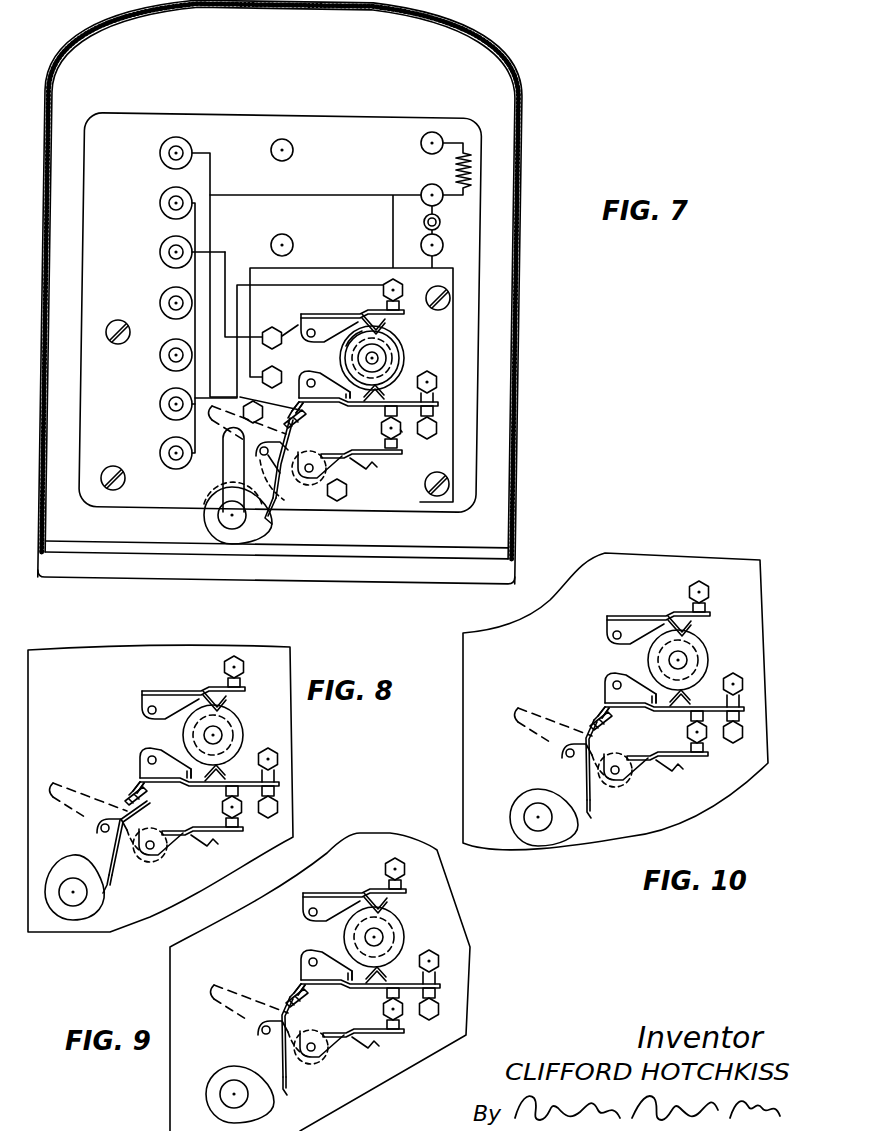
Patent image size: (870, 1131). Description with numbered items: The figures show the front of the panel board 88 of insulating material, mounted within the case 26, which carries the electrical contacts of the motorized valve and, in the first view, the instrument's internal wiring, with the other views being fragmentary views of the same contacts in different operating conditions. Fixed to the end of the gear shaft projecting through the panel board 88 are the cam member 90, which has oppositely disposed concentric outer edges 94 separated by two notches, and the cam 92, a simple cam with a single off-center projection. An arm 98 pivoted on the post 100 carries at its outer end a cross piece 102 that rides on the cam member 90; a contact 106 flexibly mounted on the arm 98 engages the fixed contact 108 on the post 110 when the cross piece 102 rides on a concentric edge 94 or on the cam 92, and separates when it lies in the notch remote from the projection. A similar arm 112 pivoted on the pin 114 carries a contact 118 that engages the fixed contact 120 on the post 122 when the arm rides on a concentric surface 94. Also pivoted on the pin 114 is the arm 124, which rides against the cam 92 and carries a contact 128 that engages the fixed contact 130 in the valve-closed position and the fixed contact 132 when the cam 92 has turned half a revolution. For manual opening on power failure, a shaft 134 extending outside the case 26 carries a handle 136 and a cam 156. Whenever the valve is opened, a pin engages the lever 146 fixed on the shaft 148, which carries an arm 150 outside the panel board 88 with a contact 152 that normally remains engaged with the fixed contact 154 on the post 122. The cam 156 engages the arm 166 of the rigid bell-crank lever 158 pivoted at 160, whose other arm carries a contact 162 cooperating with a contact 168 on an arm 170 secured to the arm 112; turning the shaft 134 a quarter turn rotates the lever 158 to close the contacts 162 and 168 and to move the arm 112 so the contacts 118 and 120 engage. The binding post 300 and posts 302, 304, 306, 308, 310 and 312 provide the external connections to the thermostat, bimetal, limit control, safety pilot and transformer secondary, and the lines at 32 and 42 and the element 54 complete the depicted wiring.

In FIG. 7, the case 26 is at (530, 119).
In FIG. 7, the base plate 32 is at (62, 582).
In FIG. 7, the lamp terminal 42 is at (441, 222).
In FIG. 7, the resistor 54 is at (476, 168).
In FIG. 7, the panel board 88 is at (477, 224).
In FIG. 8, the panel board 88 is at (77, 654).
In FIG. 9, the panel board 88 is at (190, 990).
In FIG. 10, the panel board 88 is at (762, 562).
In FIG. 7, the cam member 90 is at (402, 344).
In FIG. 8, the cam member 90 is at (269, 726).
In FIG. 10, the cam member 90 is at (700, 648).
In FIG. 7, the cam 92 is at (396, 358).
In FIG. 8, the cam 92 is at (232, 729).
In FIG. 9, the cam 92 is at (393, 933).
In FIG. 10, the cam 92 is at (697, 660).
In FIG. 7, the concentric outer edges 94 is at (375, 358).
In FIG. 8, the concentric outer edges 94 is at (218, 735).
In FIG. 9, the concentric outer edges 94 is at (383, 937).
In FIG. 10, the concentric outer edges 94 is at (683, 660).
In FIG. 7, the arm 98 is at (342, 340).
In FIG. 7, the post 100 is at (316, 321).
In FIG. 8, the post 100 is at (170, 691).
In FIG. 9, the post 100 is at (331, 893).
In FIG. 10, the post 100 is at (635, 614).
In FIG. 7, the cross piece 102 is at (391, 324).
In FIG. 8, the cross piece 102 is at (240, 697).
In FIG. 9, the cross piece 102 is at (400, 898).
In FIG. 10, the cross piece 102 is at (716, 623).
In FIG. 7, the contact 106 is at (366, 304).
In FIG. 8, the contact 106 is at (208, 677).
In FIG. 9, the contact 106 is at (389, 880).
In FIG. 10, the contact 106 is at (677, 598).
In FIG. 7, the fixed contact 108 is at (409, 295).
In FIG. 8, the fixed contact 108 is at (250, 667).
In FIG. 9, the fixed contact 108 is at (411, 856).
In FIG. 10, the fixed contact 108 is at (714, 585).
In FIG. 7, the post 110 is at (408, 285).
In FIG. 8, the post 110 is at (244, 648).
In FIG. 9, the post 110 is at (403, 847).
In FIG. 10, the post 110 is at (708, 568).
In FIG. 7, the arm 112 is at (331, 379).
In FIG. 8, the arm 112 is at (193, 784).
In FIG. 9, the arm 112 is at (339, 994).
In FIG. 10, the arm 112 is at (640, 684).
In FIG. 7, the pin 114 is at (312, 373).
In FIG. 8, the pin 114 is at (149, 760).
In FIG. 9, the pin 114 is at (312, 959).
In FIG. 10, the pin 114 is at (615, 682).
In FIG. 7, the contact 118 is at (370, 414).
In FIG. 8, the contact 118 is at (241, 777).
In FIG. 9, the contact 118 is at (374, 991).
In FIG. 10, the contact 118 is at (703, 704).
In FIG. 7, the fixed contact 120 is at (372, 428).
In FIG. 8, the fixed contact 120 is at (217, 805).
In FIG. 9, the fixed contact 120 is at (376, 1007).
In FIG. 10, the fixed contact 120 is at (683, 727).
In FIG. 7, the post 122 is at (421, 448).
In FIG. 7, the arm 124 is at (389, 393).
In FIG. 8, the arm 124 is at (189, 759).
In FIG. 9, the arm 124 is at (349, 959).
In FIG. 10, the arm 124 is at (662, 710).
In FIG. 7, the contact 128 is at (400, 393).
In FIG. 8, the contact 128 is at (241, 770).
In FIG. 9, the contact 128 is at (407, 976).
In FIG. 10, the contact 128 is at (709, 697).
In FIG. 7, the fixed contact 130 is at (430, 422).
In FIG. 8, the fixed contact 130 is at (301, 796).
In FIG. 9, the fixed contact 130 is at (470, 1000).
In FIG. 10, the fixed contact 130 is at (765, 726).
In FIG. 7, the fixed contact 132 is at (441, 381).
In FIG. 8, the fixed contact 132 is at (290, 758).
In FIG. 9, the fixed contact 132 is at (463, 964).
In FIG. 10, the fixed contact 132 is at (765, 689).
In FIG. 7, the shaft 134 is at (238, 537).
In FIG. 8, the shaft 134 is at (71, 914).
In FIG. 9, the shaft 134 is at (191, 1094).
In FIG. 10, the shaft 134 is at (506, 817).
In FIG. 7, the handle 136 is at (223, 465).
In FIG. 7, the lever 146 is at (216, 424).
In FIG. 8, the lever 146 is at (83, 783).
In FIG. 9, the lever 146 is at (234, 1012).
In FIG. 10, the lever 146 is at (538, 726).
In FIG. 7, the shaft 148 is at (317, 497).
In FIG. 8, the shaft 148 is at (158, 851).
In FIG. 9, the shaft 148 is at (333, 1051).
In FIG. 10, the shaft 148 is at (629, 780).
In FIG. 7, the arm 150 is at (367, 476).
In FIG. 8, the arm 150 is at (213, 851).
In FIG. 9, the arm 150 is at (381, 1048).
In FIG. 10, the arm 150 is at (681, 773).
In FIG. 7, the contact 152 is at (361, 462).
In FIG. 8, the contact 152 is at (214, 838).
In FIG. 9, the contact 152 is at (386, 1028).
In FIG. 10, the contact 152 is at (680, 762).
In FIG. 7, the fixed contact 154 is at (373, 439).
In FIG. 8, the fixed contact 154 is at (214, 815).
In FIG. 9, the fixed contact 154 is at (377, 1018).
In FIG. 10, the fixed contact 154 is at (681, 740).
In FIG. 7, the cam 156 is at (219, 513).
In FIG. 8, the cam 156 is at (69, 879).
In FIG. 9, the cam 156 is at (256, 1094).
In FIG. 10, the cam 156 is at (551, 819).
In FIG. 7, the bell-crank lever 158 is at (306, 458).
In FIG. 8, the bell-crank lever 158 is at (137, 838).
In FIG. 10, the bell-crank lever 158 is at (570, 760).
In FIG. 7, the pivot 160 is at (242, 471).
In FIG. 8, the pivot 160 is at (96, 833).
In FIG. 9, the pivot 160 is at (262, 1039).
In FIG. 10, the pivot 160 is at (563, 762).
In FIG. 7, the contact 162 is at (309, 419).
In FIG. 8, the contact 162 is at (150, 797).
In FIG. 9, the contact 162 is at (310, 998).
In FIG. 10, the contact 162 is at (611, 722).
In FIG. 7, the arm 166 is at (285, 513).
In FIG. 8, the arm 166 is at (123, 889).
In FIG. 9, the arm 166 is at (306, 1087).
In FIG. 10, the arm 166 is at (603, 813).
In FIG. 7, the contact 168 is at (307, 409).
In FIG. 8, the contact 168 is at (147, 785).
In FIG. 9, the contact 168 is at (277, 985).
In FIG. 10, the contact 168 is at (581, 709).
In FIG. 7, the arm 170 is at (286, 400).
In FIG. 8, the arm 170 is at (126, 774).
In FIG. 9, the arm 170 is at (288, 974).
In FIG. 10, the arm 170 is at (592, 697).
In FIG. 7, the binding post 300 is at (160, 153).
In FIG. 7, the post 302 is at (160, 203).
In FIG. 7, the post 304 is at (160, 252).
In FIG. 7, the post 306 is at (160, 303).
In FIG. 7, the terminal 308 is at (160, 355).
In FIG. 7, the post 310 is at (160, 404).
In FIG. 7, the post 312 is at (160, 453).